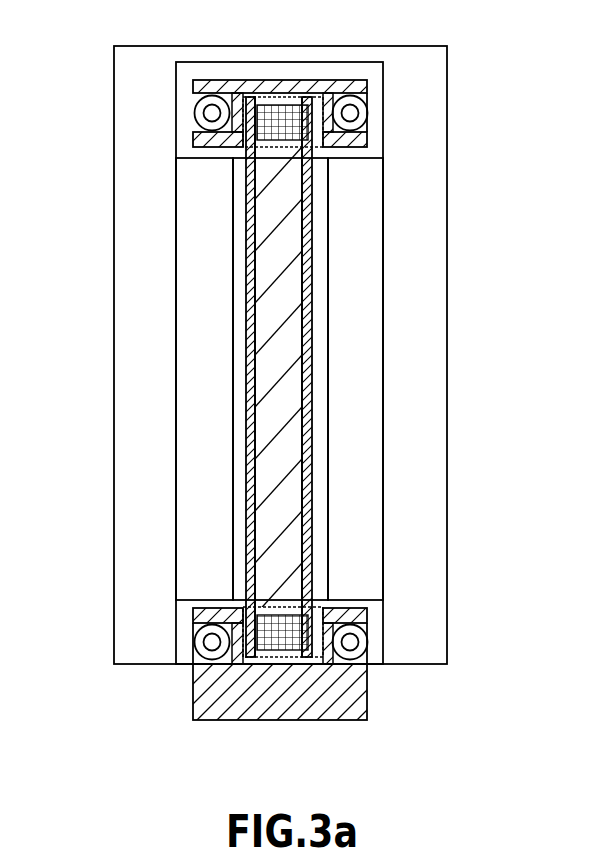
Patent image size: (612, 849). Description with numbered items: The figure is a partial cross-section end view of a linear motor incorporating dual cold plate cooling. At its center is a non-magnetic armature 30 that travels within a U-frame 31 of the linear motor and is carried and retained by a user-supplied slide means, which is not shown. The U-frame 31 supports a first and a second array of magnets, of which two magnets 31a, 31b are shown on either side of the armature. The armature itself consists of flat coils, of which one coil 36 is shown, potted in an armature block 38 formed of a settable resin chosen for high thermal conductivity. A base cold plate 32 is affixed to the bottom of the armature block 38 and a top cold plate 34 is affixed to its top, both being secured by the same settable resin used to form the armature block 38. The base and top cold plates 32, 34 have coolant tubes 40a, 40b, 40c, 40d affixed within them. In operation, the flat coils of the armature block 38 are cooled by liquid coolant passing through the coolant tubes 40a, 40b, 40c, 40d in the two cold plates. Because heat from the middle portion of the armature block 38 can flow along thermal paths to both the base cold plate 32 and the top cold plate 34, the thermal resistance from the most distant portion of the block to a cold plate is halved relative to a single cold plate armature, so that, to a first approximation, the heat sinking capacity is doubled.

The non-magnetic armature 30 is at (195, 757).
The U-frame 31 is at (113, 45).
The magnet 31a is at (195, 312).
The magnet 31b is at (363, 275).
The base cold plate 32 is at (345, 721).
The top cold plate 34 is at (367, 86).
The coil 36 is at (285, 512).
The armature block 38 is at (250, 400).
The coolant tube 40a is at (368, 116).
The coolant tube 40b is at (193, 120).
The coolant tube 40c is at (368, 640).
The coolant tube 40d is at (193, 643).